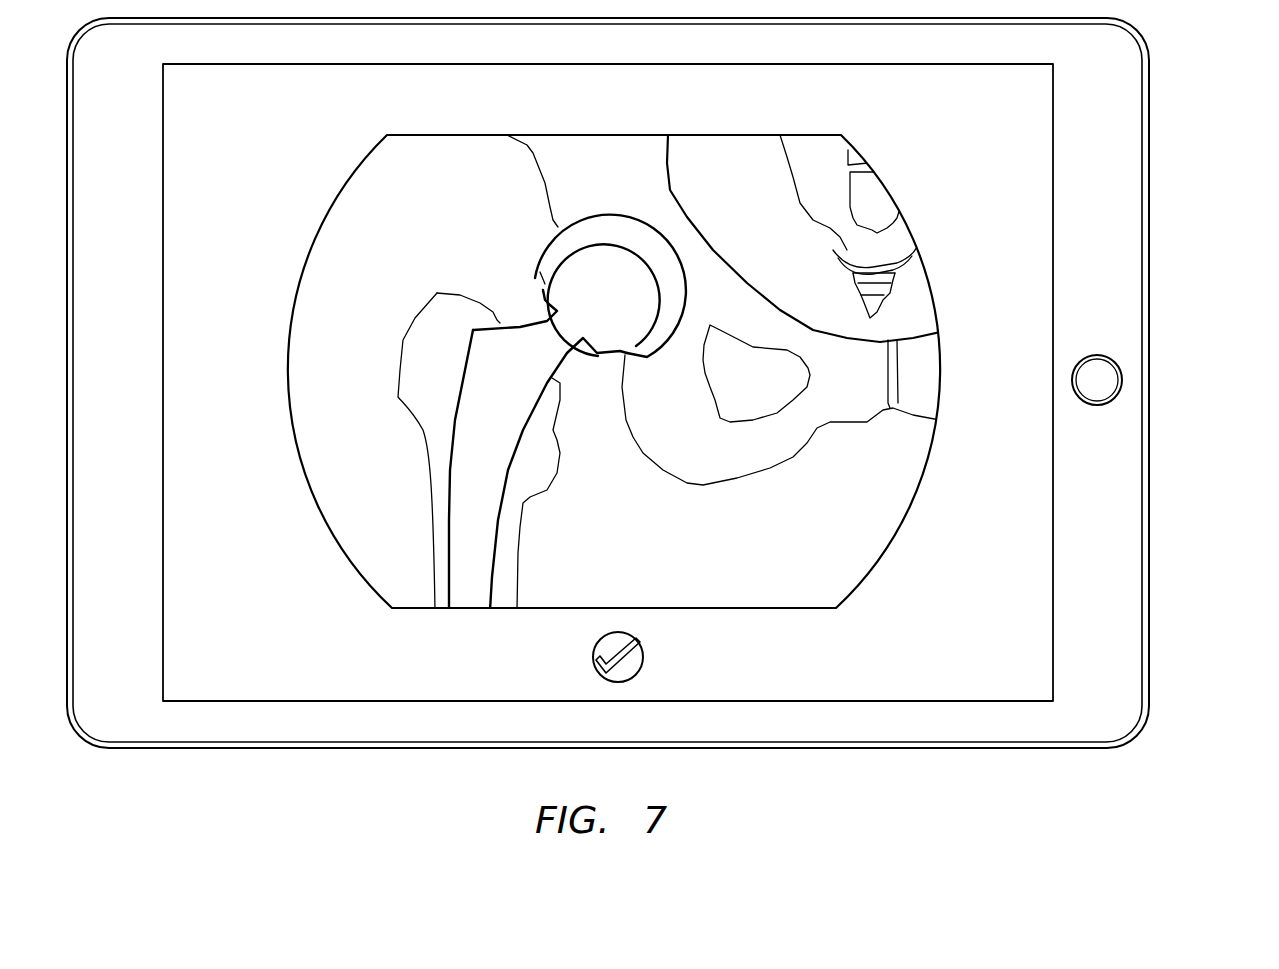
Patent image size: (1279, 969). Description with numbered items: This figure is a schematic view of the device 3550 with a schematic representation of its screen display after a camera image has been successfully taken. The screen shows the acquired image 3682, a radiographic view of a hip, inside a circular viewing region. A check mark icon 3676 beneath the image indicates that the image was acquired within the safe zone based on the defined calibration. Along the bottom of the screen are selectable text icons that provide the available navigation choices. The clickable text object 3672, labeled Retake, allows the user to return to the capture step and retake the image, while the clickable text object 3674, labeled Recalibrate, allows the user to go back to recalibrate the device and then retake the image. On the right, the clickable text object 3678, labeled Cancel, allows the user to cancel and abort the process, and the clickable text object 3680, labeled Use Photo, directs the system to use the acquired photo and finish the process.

The device 3550 is at (1150, 117).
The clickable text object 3672 is at (260, 647).
The clickable text object 3674 is at (373, 647).
The check mark icon 3676 is at (617, 647).
The clickable text object 3678 is at (838, 648).
The clickable text object 3680 is at (985, 647).
The image 3682 is at (440, 238).